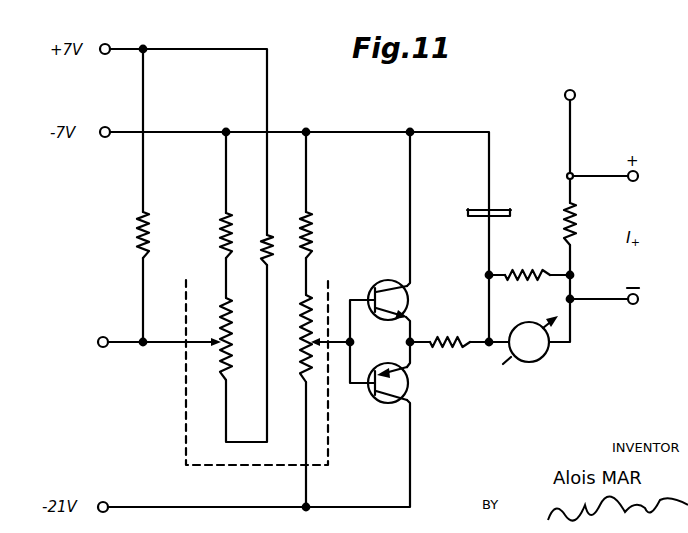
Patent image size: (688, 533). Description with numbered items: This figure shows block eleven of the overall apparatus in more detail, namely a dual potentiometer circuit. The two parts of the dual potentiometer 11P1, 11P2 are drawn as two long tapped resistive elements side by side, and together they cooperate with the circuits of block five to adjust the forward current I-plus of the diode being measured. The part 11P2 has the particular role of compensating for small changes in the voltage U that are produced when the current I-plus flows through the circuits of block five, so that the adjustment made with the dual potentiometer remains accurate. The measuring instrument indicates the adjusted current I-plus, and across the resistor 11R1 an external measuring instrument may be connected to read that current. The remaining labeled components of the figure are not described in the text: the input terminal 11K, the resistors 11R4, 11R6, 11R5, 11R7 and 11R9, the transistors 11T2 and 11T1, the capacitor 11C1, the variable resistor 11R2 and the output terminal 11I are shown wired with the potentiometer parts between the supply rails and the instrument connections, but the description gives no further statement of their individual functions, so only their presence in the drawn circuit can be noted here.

The input terminal 11K is at (127, 330).
The resistor 11R4 is at (143, 213).
The resistor 11R6 is at (226, 213).
The resistor 11R5 is at (268, 259).
The resistor 11R7 is at (306, 214).
The dual potentiometer part 11P2 is at (220, 360).
The dual potentiometer part 11P1 is at (308, 373).
The transistor 11T2 is at (405, 303).
The transistor 11T1 is at (405, 386).
The resistor 11R9 is at (463, 323).
The capacitor 11C1 is at (484, 210).
The current output terminal 11I is at (595, 136).
The resistor 11R1 is at (566, 212).
The variable resistor 11R2 is at (545, 275).